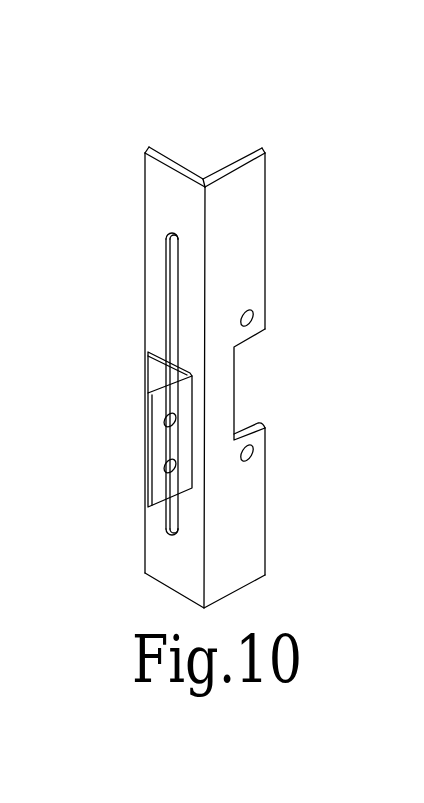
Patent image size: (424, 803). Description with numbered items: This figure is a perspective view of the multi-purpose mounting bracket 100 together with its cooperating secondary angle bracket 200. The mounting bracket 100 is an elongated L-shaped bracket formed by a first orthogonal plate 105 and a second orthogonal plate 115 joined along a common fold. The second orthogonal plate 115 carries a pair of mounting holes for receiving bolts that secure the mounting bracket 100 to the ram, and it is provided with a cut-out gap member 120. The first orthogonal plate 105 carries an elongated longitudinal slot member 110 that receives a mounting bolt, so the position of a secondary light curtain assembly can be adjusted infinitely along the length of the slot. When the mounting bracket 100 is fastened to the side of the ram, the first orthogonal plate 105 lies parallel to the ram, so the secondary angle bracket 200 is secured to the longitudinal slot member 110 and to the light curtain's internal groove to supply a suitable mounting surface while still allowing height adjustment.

The mounting bracket 100 is at (216, 325).
The first orthogonal plate 105 is at (157, 253).
The longitudinal slot member 110 is at (170, 236).
The second orthogonal plate 115 is at (236, 263).
The cut-out gap member 120 is at (231, 410).
The secondary angle bracket 200 is at (163, 381).